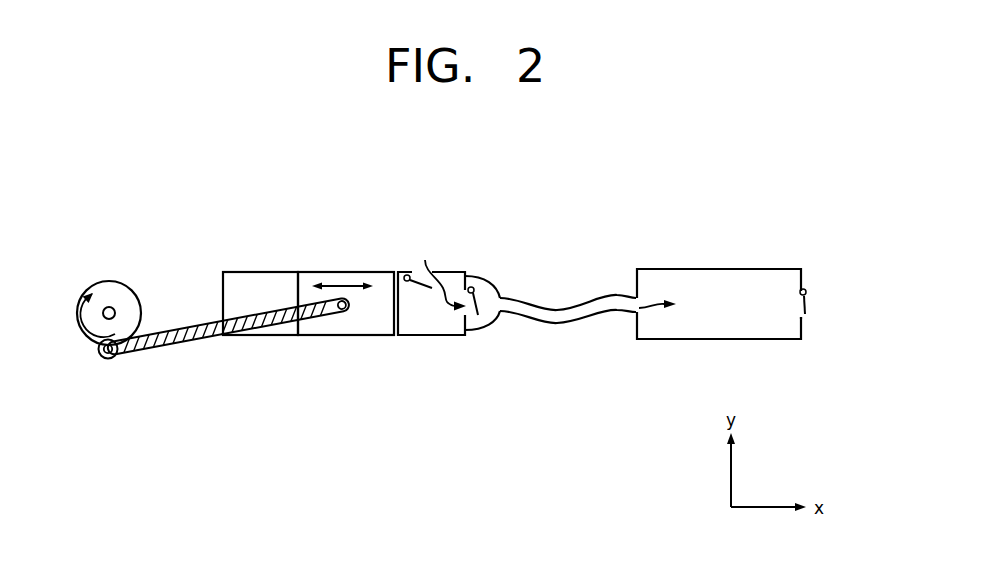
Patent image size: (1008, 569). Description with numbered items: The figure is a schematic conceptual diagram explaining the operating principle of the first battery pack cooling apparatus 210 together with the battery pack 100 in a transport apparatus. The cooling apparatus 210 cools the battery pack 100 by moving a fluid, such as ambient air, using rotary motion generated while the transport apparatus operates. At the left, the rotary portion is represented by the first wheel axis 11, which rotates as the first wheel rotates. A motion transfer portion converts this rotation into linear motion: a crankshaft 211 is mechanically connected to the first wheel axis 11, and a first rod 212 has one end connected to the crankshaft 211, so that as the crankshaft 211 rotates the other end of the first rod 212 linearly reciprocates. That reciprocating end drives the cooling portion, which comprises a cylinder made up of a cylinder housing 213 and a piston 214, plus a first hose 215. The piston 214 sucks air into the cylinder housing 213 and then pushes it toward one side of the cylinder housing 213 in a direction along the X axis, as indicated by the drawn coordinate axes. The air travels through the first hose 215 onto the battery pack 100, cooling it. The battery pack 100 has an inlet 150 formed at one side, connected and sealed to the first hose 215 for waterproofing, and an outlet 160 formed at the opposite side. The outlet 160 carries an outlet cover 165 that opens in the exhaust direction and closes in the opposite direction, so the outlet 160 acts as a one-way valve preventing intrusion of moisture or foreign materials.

The first wheel axis 11 is at (106, 318).
The battery pack 100 is at (695, 268).
The inlet 150 is at (627, 293).
The outlet 160 is at (790, 296).
The outlet cover 165 is at (811, 310).
The first battery pack cooling apparatus 210 is at (436, 226).
The crankshaft 211 is at (112, 281).
The first rod 212 is at (198, 326).
The cylinder housing 213 is at (262, 272).
The piston 214 is at (345, 272).
The first hose 215 is at (558, 309).